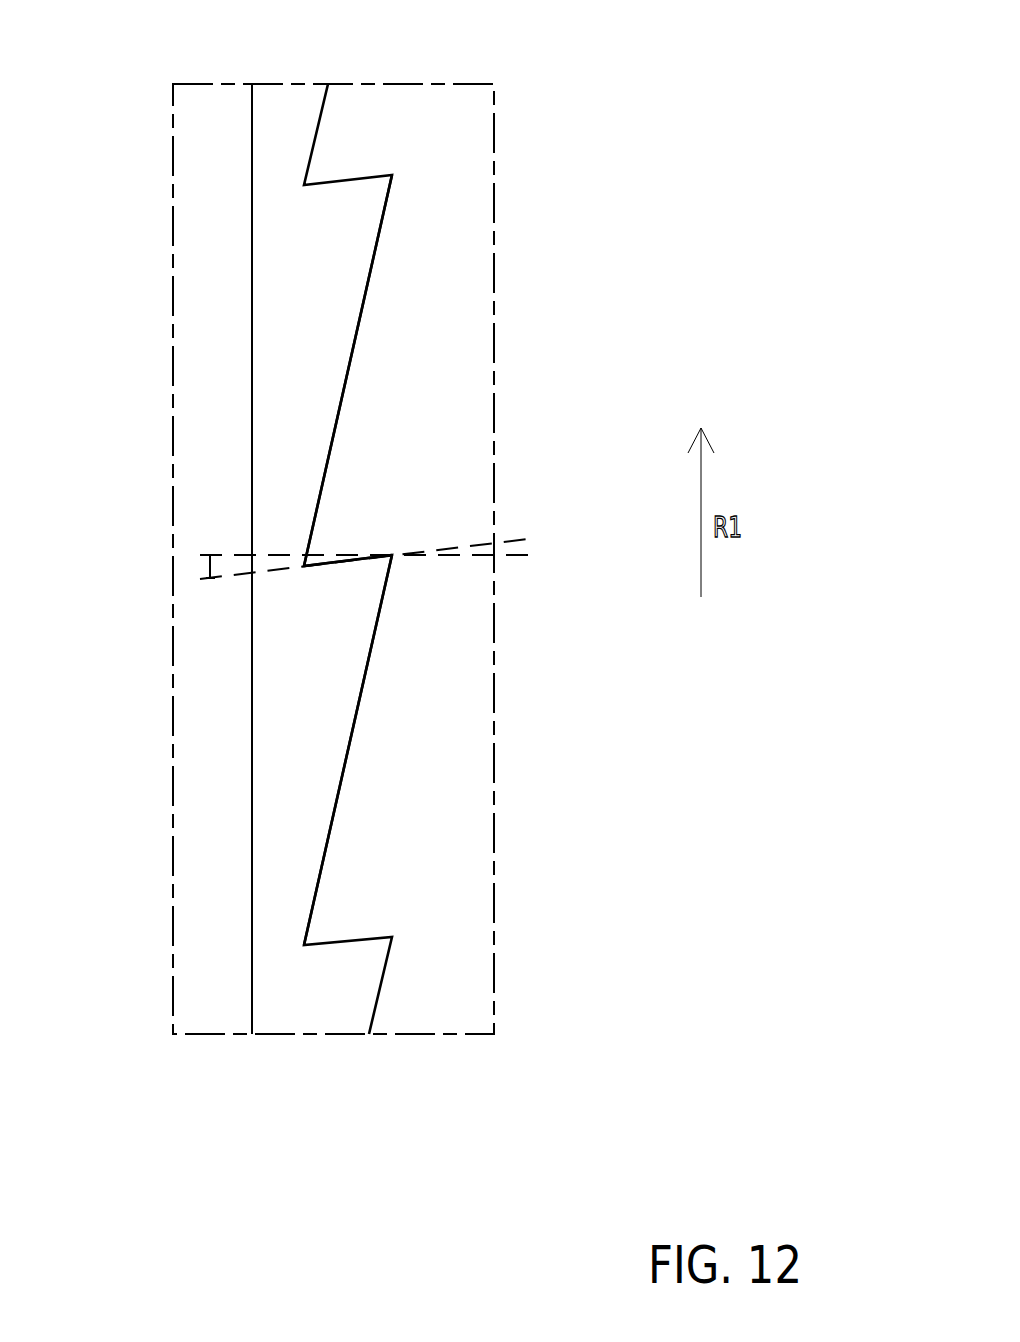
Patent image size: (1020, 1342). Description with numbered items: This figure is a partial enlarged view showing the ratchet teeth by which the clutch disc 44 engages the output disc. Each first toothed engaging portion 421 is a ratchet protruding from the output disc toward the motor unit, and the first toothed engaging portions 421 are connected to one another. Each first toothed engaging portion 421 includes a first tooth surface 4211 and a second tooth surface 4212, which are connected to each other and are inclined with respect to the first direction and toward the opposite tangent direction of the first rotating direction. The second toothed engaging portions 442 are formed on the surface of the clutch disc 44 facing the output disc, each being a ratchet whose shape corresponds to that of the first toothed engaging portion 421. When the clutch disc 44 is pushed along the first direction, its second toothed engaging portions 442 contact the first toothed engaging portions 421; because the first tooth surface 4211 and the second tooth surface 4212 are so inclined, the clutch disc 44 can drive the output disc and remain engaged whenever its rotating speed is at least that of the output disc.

The clutch disc 44 is at (210, 135).
The first toothed engaging portion 421 is at (347, 537).
The first tooth surface 4211 is at (350, 358).
The second tooth surface 4212 is at (348, 558).
The second toothed engaging portion 442 is at (338, 687).